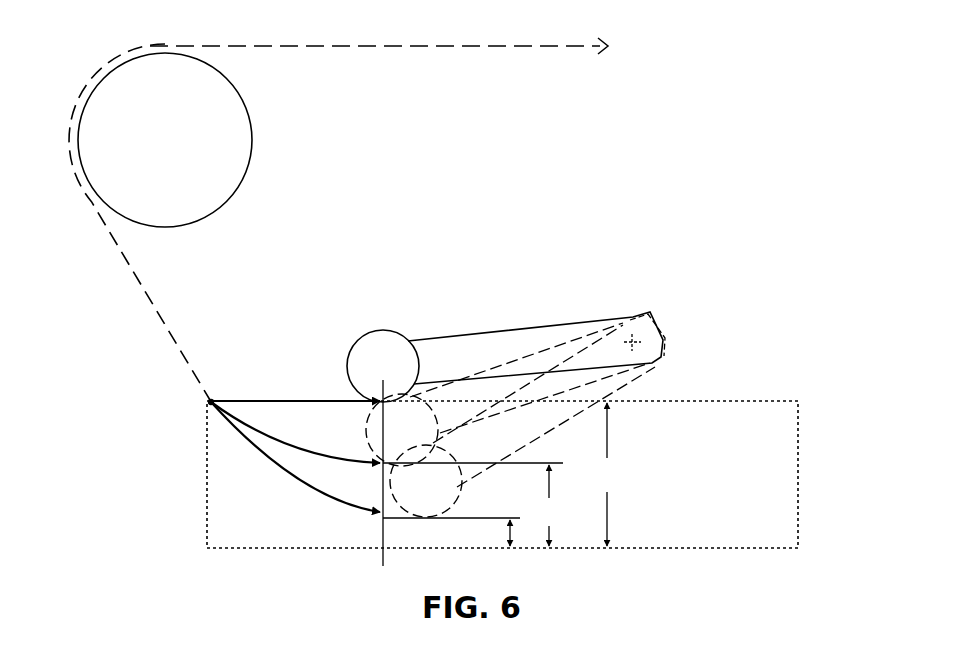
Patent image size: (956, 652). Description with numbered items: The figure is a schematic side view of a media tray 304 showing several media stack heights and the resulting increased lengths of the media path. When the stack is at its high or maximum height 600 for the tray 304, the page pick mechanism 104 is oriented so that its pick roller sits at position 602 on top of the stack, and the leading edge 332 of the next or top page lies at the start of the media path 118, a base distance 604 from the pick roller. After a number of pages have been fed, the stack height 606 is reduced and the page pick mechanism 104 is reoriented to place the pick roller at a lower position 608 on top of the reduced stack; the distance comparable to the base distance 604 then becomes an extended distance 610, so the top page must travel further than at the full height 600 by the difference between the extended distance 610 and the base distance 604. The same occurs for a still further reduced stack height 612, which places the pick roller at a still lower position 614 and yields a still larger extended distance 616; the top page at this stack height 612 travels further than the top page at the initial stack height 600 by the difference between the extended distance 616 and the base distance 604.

The page pick mechanism 104 is at (428, 296).
The media path 118 is at (150, 305).
The media tray 304 is at (682, 550).
The leading edge 332 is at (212, 398).
The maximum height 600 is at (609, 474).
The position 602 is at (383, 366).
The base distance 604 is at (295, 390).
The stack height 606 is at (552, 505).
The lower position 608 is at (402, 430).
The extended distance 610 is at (295, 432).
The stack height 612 is at (506, 548).
The position 614 is at (426, 481).
The extended distance 616 is at (295, 457).